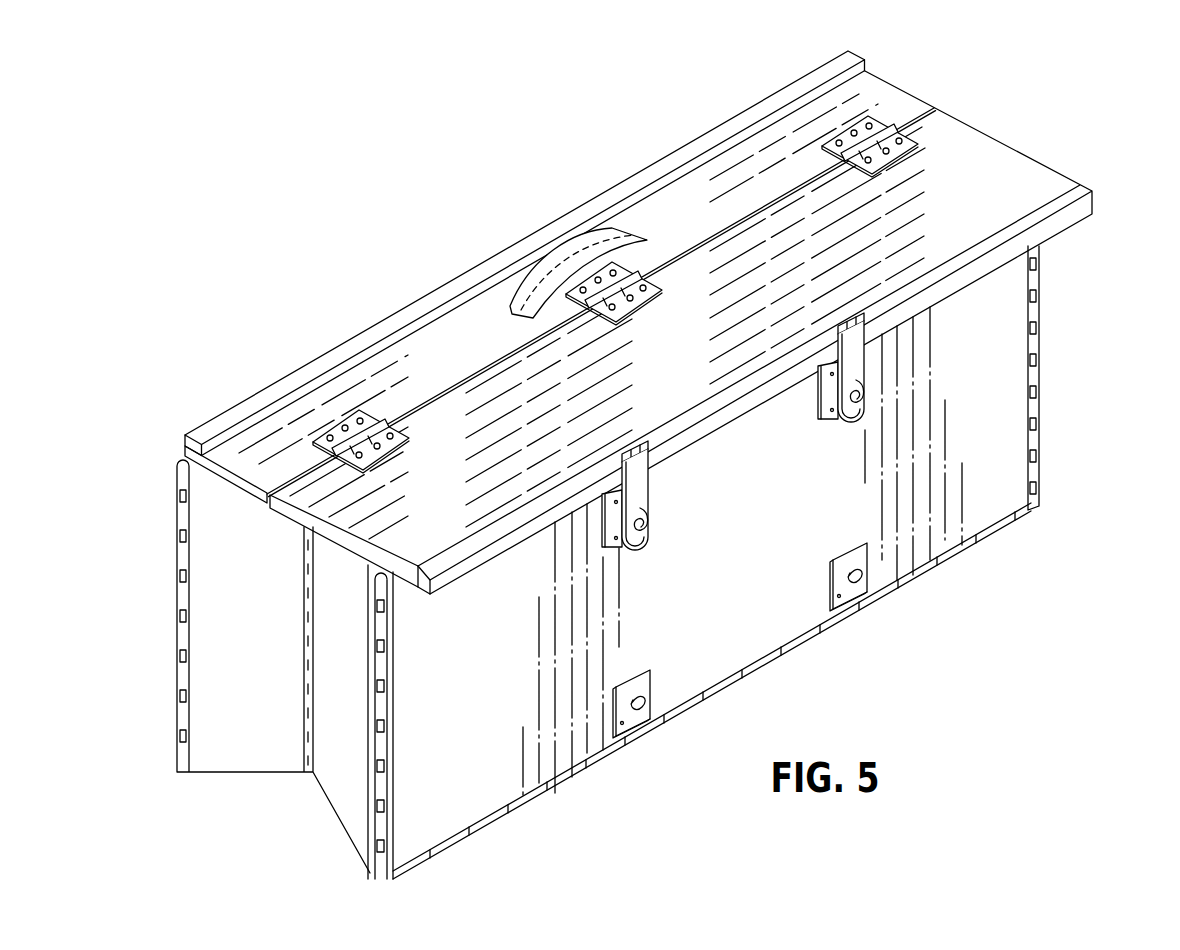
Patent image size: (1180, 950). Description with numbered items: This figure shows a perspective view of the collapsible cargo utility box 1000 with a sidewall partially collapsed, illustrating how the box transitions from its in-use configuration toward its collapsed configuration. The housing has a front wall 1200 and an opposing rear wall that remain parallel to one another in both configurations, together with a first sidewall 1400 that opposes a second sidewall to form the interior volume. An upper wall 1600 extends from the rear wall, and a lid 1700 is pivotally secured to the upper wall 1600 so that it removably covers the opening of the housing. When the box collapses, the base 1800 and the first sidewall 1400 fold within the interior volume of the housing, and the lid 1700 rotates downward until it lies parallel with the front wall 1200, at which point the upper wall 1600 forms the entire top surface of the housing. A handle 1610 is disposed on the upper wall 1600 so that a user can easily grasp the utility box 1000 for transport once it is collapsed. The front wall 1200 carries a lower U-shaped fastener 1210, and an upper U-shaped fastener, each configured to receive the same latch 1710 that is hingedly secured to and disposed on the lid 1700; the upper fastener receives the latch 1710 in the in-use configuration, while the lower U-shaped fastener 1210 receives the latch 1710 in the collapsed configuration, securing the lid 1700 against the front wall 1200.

The collapsible cargo utility box 1000 is at (669, 480).
The front wall 1200 is at (1008, 420).
The lower U-shaped fastener 1210 is at (868, 613).
The first sidewall 1400 is at (245, 733).
The upper wall 1600 is at (299, 378).
The handle 1610 is at (529, 277).
The lid 1700 is at (1034, 165).
The latch 1710 is at (836, 413).
The base 1800 is at (410, 878).